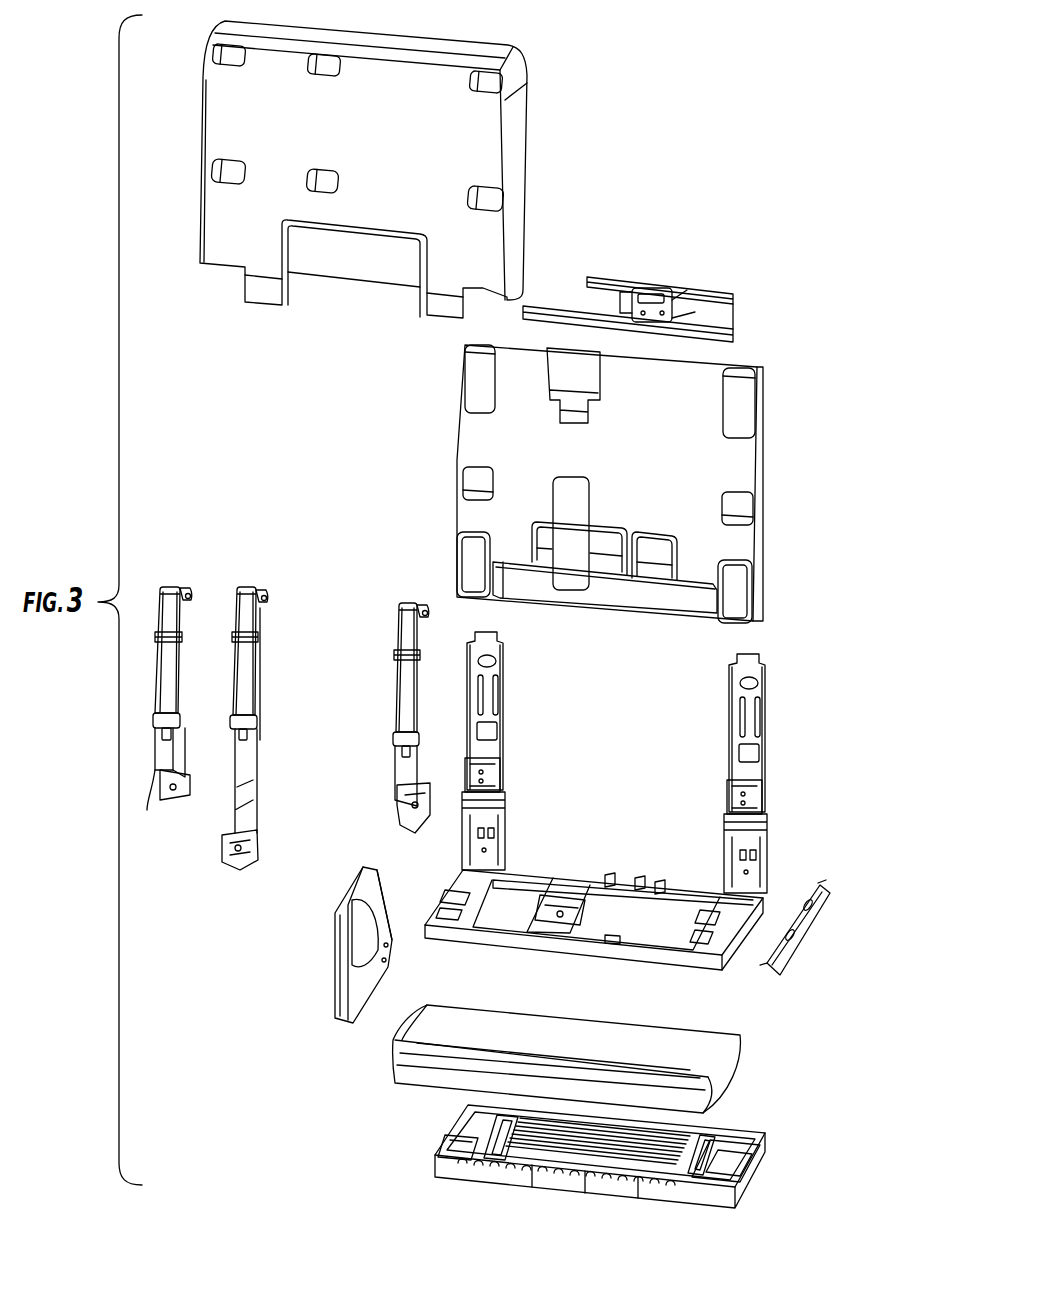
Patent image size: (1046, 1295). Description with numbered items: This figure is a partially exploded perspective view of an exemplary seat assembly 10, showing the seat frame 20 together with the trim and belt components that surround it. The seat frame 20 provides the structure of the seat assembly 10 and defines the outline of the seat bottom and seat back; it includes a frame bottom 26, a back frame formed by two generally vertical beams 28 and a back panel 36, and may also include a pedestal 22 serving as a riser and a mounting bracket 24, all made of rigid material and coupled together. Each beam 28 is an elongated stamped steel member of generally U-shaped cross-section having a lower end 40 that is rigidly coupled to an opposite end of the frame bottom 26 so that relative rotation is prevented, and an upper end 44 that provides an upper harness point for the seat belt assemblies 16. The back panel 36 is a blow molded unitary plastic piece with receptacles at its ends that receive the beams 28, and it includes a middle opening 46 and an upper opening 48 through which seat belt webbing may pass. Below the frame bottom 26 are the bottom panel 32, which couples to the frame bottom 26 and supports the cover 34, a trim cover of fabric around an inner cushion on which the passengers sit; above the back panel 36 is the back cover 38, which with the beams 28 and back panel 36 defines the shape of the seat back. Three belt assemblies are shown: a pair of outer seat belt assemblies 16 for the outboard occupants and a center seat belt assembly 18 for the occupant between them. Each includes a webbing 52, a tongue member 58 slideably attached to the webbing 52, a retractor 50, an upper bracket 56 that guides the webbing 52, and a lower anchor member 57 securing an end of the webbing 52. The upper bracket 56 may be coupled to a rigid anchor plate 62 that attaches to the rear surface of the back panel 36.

The seat assembly 10 is at (702, 163).
The seat belt assembly 16 is at (390, 583).
The center seat belt assembly 18 is at (253, 682).
The seat frame 20 is at (790, 665).
The pedestal 22 is at (332, 985).
The mounting bracket 24 is at (797, 940).
The frame bottom 26 is at (530, 943).
The beam 28 is at (502, 747).
The bottom panel 32 is at (763, 1137).
The cover 34 is at (716, 1080).
The back panel 36 is at (639, 484).
The back cover 38 is at (417, 273).
The lower end 40 is at (502, 850).
The upper end 44 is at (502, 668).
The middle opening 46 is at (742, 507).
The upper opening 48 is at (743, 393).
The retractor 50 is at (397, 813).
The webbing 52 is at (240, 662).
The upper bracket 56 is at (270, 598).
The lower anchor member 57 is at (233, 812).
The tongue member 58 is at (393, 742).
The anchor plate 62 is at (735, 328).